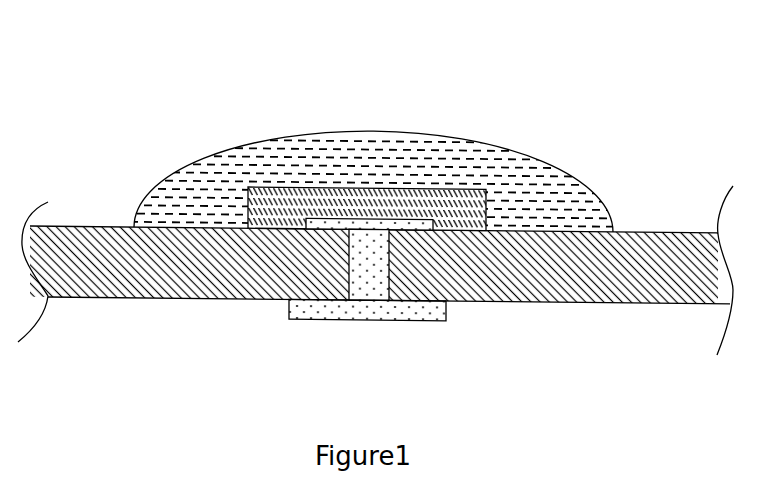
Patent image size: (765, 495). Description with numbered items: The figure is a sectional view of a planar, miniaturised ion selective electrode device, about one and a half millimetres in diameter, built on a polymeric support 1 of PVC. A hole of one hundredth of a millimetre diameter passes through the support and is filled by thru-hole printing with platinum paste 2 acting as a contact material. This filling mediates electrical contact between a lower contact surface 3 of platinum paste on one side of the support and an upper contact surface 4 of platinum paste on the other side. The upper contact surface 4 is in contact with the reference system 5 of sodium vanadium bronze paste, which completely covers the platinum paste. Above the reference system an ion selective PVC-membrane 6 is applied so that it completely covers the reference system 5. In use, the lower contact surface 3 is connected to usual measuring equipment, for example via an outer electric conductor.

The polymeric support 1 is at (112, 286).
The platinum paste 2 is at (350, 292).
The lower contact surface 3 is at (450, 321).
The upper contact surface 4 is at (303, 207).
The reference system 5 is at (487, 199).
The ion selective PVC-membrane 6 is at (440, 144).